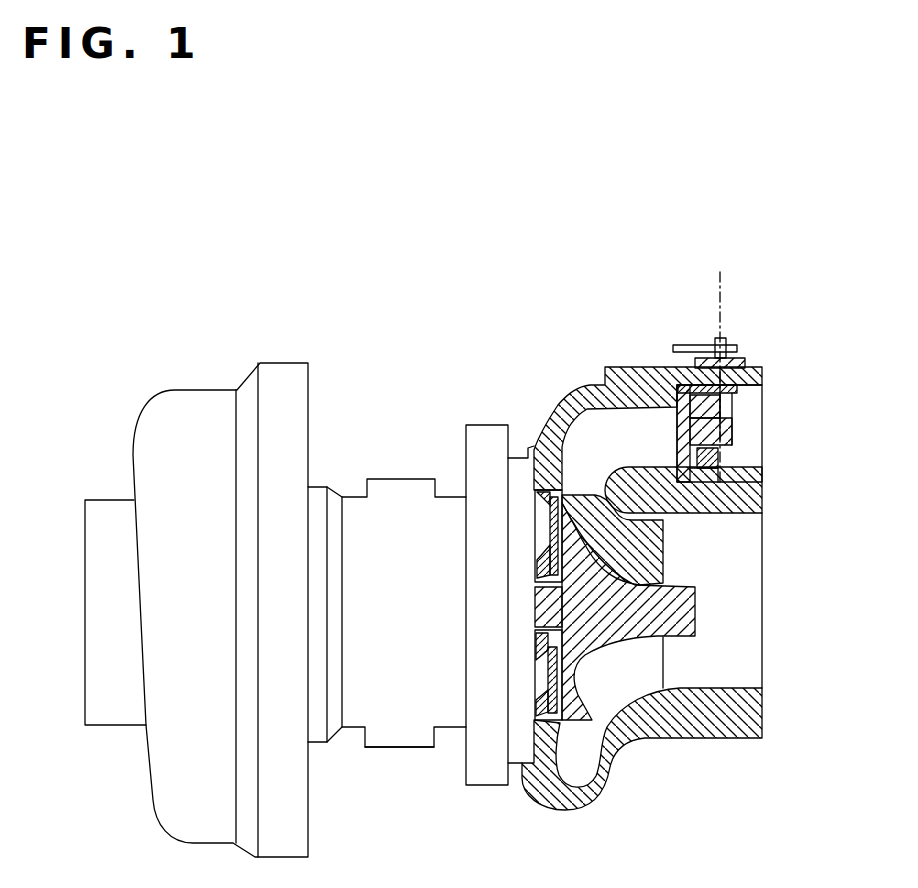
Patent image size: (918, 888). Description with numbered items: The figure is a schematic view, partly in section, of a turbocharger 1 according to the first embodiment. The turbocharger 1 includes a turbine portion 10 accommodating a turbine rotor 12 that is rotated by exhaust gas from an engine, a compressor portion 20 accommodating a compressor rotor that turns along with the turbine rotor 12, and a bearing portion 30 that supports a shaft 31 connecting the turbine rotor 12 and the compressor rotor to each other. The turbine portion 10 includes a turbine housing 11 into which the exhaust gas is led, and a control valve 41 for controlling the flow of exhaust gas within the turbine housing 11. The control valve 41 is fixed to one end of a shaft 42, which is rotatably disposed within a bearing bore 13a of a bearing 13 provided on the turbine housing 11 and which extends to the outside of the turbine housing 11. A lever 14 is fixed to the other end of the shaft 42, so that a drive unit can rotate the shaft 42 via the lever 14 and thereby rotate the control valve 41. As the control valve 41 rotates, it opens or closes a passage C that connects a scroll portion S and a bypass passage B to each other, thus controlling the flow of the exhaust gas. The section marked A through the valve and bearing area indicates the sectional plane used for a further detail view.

The turbocharger 1 is at (370, 426).
The turbine portion 10 is at (521, 412).
The turbine housing 11 is at (735, 406).
The turbine rotor 12 is at (692, 610).
The bearing 13 is at (752, 372).
The bearing bore 13a is at (742, 410).
The lever 14 is at (706, 344).
The compressor portion 20 is at (124, 404).
The bearing portion 30 is at (398, 756).
The shaft 31 is at (530, 603).
The control valve 41 is at (705, 482).
The shaft 42 is at (740, 346).
The scroll portion S is at (582, 413).
The passage C is at (665, 407).
The bypass passage B is at (753, 448).
The section line A is at (726, 277).